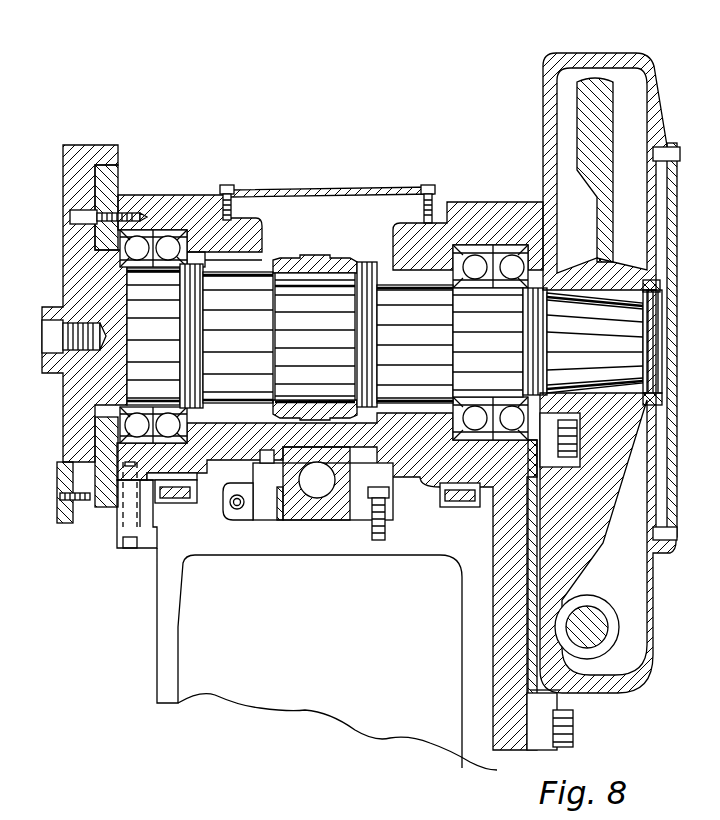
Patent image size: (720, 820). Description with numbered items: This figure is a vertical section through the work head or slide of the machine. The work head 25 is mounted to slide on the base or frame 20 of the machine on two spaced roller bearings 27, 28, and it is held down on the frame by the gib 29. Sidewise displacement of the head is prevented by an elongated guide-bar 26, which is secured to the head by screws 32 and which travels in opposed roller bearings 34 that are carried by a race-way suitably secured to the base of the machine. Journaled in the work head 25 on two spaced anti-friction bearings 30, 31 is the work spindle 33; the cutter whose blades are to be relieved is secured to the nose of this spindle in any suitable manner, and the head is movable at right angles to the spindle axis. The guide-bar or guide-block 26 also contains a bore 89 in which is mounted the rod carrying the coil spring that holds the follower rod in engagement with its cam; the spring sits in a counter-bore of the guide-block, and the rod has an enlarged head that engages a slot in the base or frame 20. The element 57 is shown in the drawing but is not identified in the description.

The base or frame 20 is at (160, 676).
The work head 25 is at (440, 222).
The guide-bar 26 is at (328, 521).
The roller bearing 27 is at (178, 500).
The roller bearing 28 is at (467, 507).
The gib 29 is at (120, 538).
The anti-friction bearing 30 is at (170, 240).
The anti-friction bearing 31 is at (476, 258).
The screw 32 is at (275, 466).
The work spindle 33 is at (272, 262).
The roller bearings 34 is at (362, 522).
The bracket 57 is at (262, 514).
The bore 89 is at (332, 478).